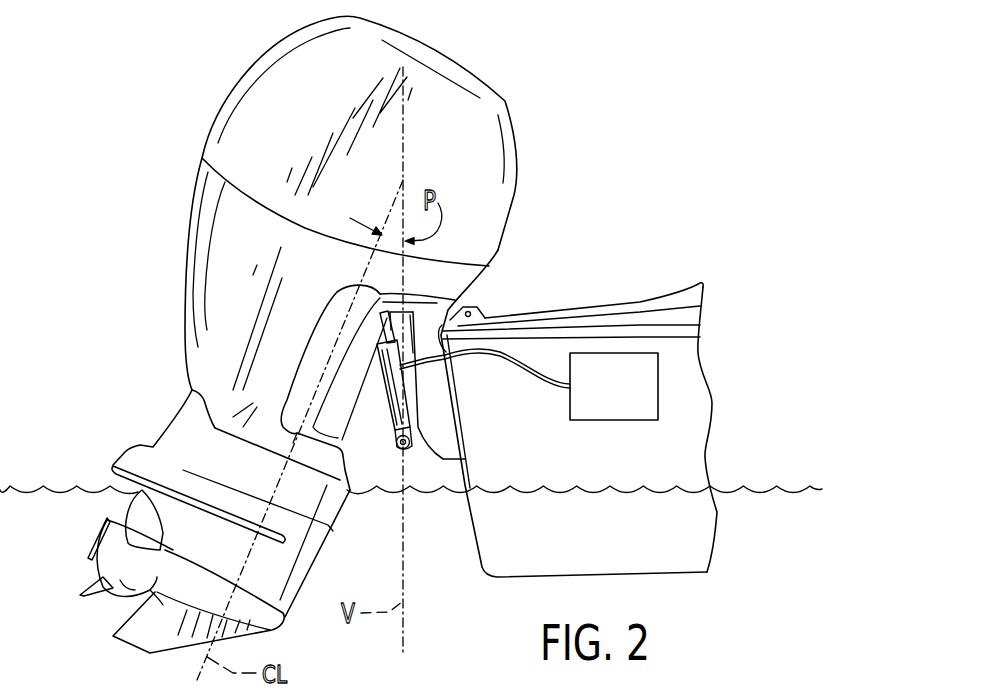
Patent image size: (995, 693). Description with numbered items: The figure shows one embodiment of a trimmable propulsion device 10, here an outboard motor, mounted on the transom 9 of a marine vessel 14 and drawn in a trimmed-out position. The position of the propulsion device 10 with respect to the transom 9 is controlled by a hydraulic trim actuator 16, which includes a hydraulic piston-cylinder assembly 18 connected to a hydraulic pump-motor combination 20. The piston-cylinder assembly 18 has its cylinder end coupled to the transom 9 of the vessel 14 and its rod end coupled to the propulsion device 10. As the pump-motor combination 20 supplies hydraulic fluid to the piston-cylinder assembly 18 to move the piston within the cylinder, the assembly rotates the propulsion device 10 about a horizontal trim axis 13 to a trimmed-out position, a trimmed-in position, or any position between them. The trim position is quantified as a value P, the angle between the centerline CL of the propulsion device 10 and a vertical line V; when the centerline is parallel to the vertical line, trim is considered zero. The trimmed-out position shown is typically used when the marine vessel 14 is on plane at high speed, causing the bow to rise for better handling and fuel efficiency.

The trimmable propulsion device 10 is at (442, 52).
The horizontal trim axis 13 is at (437, 303).
The marine vessel 14 is at (692, 402).
The transom 9 is at (477, 547).
The hydraulic trim actuator 16 is at (418, 402).
The hydraulic piston-cylinder assembly 18 is at (387, 397).
The hydraulic pump-motor combination 20 is at (627, 398).